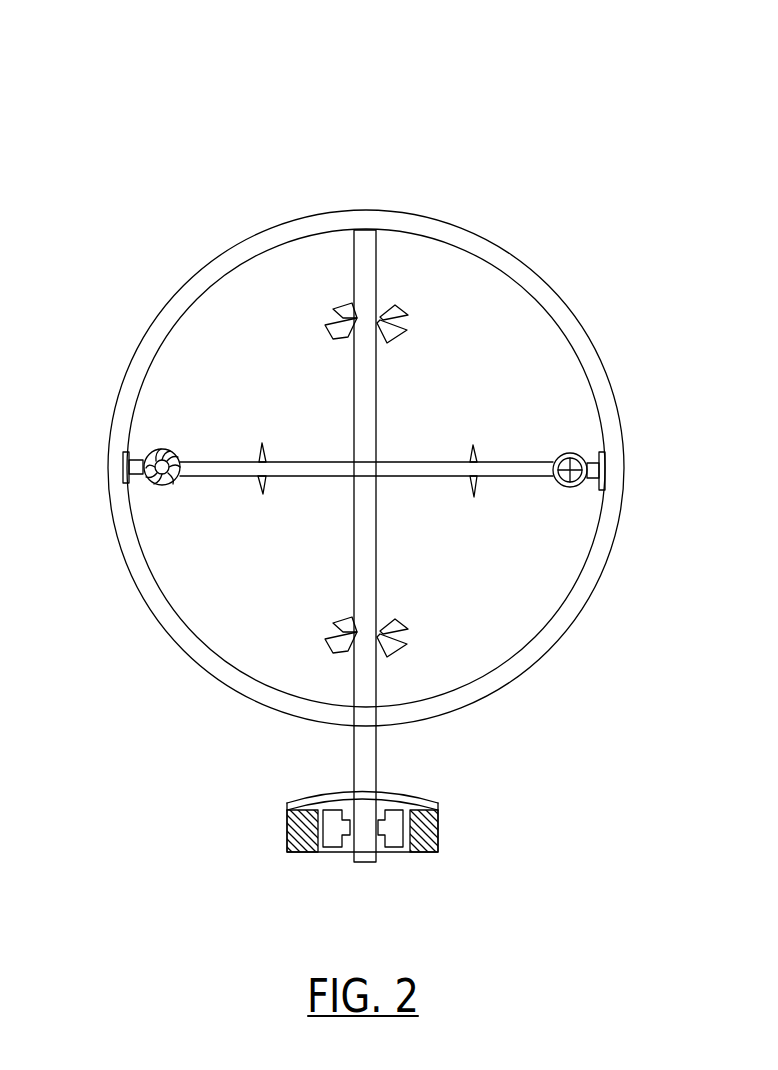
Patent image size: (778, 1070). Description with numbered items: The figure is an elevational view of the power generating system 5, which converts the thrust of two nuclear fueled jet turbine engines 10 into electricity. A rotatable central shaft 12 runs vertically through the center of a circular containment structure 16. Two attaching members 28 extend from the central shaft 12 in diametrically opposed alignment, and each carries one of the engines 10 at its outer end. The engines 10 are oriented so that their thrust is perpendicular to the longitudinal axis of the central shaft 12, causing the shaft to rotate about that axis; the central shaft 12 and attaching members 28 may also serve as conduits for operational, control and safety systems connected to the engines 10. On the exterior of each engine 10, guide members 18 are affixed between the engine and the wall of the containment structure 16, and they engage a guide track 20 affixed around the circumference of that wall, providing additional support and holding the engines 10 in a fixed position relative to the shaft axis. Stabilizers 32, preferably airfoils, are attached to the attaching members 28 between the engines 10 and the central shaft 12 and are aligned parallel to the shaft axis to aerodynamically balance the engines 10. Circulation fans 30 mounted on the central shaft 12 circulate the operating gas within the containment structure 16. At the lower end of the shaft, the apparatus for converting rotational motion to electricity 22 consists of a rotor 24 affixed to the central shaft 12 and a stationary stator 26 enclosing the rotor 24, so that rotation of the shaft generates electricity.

The power generating system 5 is at (370, 122).
The nuclear fueled jet turbine engine 10 is at (158, 443).
The rotatable central shaft 12 is at (345, 266).
The containment structure 16 is at (448, 216).
The guide member 18 is at (140, 484).
The guide track 20 is at (123, 447).
The apparatus for converting rotational motion to electricity 22 is at (318, 828).
The rotor 24 is at (338, 850).
The stationary stator 26 is at (420, 852).
The attaching member 28 is at (230, 456).
The circulation fan 30 is at (322, 302).
The stabilizer 32 is at (262, 432).